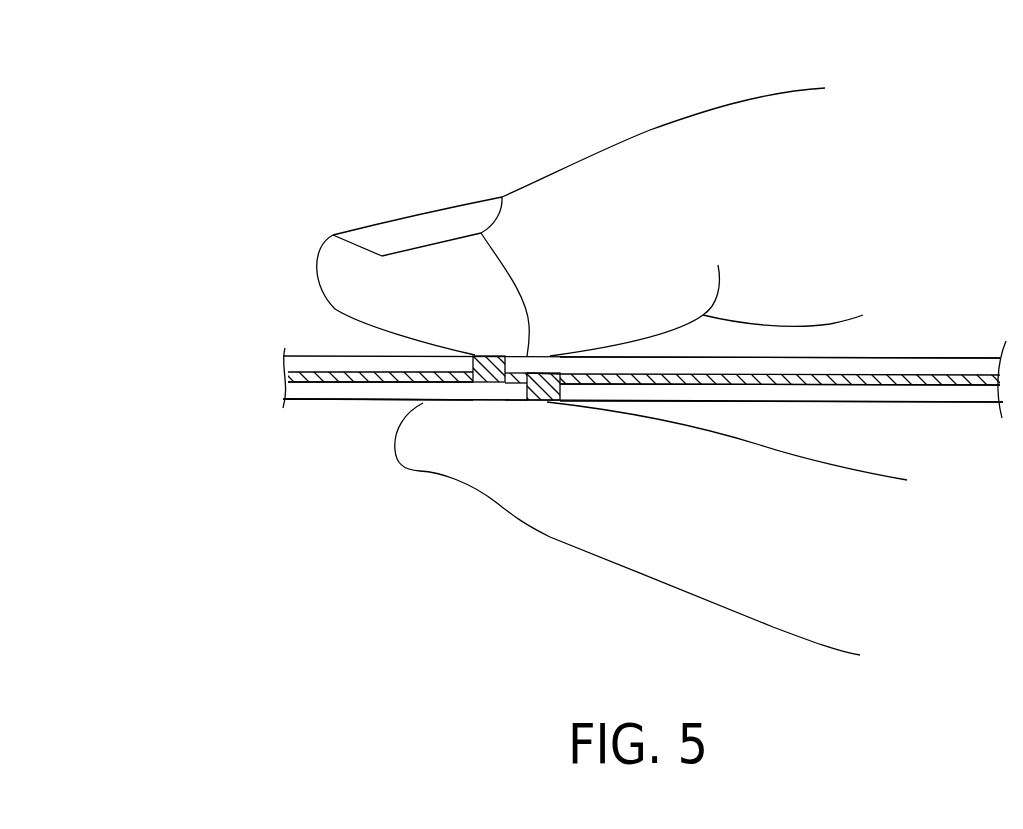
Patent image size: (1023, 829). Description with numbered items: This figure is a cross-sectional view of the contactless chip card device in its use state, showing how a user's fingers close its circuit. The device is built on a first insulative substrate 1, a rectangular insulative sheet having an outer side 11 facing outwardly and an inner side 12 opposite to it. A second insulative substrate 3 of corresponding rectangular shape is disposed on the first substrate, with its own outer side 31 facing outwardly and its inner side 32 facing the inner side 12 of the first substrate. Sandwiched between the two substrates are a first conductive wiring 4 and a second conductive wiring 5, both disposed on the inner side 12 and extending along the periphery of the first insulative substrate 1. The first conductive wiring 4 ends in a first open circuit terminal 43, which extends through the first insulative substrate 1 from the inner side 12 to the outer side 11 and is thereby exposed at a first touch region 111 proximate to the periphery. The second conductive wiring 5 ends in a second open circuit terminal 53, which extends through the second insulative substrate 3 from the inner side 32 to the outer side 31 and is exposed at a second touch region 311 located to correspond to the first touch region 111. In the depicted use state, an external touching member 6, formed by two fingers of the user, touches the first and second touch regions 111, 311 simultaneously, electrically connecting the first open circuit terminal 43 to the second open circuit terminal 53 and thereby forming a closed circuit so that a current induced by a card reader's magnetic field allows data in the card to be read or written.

The first insulative substrate 1 is at (297, 389).
The outer side 11 is at (383, 408).
The first touch region 111 is at (518, 402).
The inner side 12 is at (342, 400).
The second insulative substrate 3 is at (903, 363).
The outer side 31 is at (878, 353).
The second touch region 311 is at (482, 236).
The inner side 32 is at (930, 362).
The first conductive wiring 4 is at (903, 385).
The first open circuit terminal 43 is at (547, 393).
The second conductive wiring 5 is at (303, 375).
The second open circuit terminal 53 is at (493, 355).
The external touching member 6 is at (730, 128).